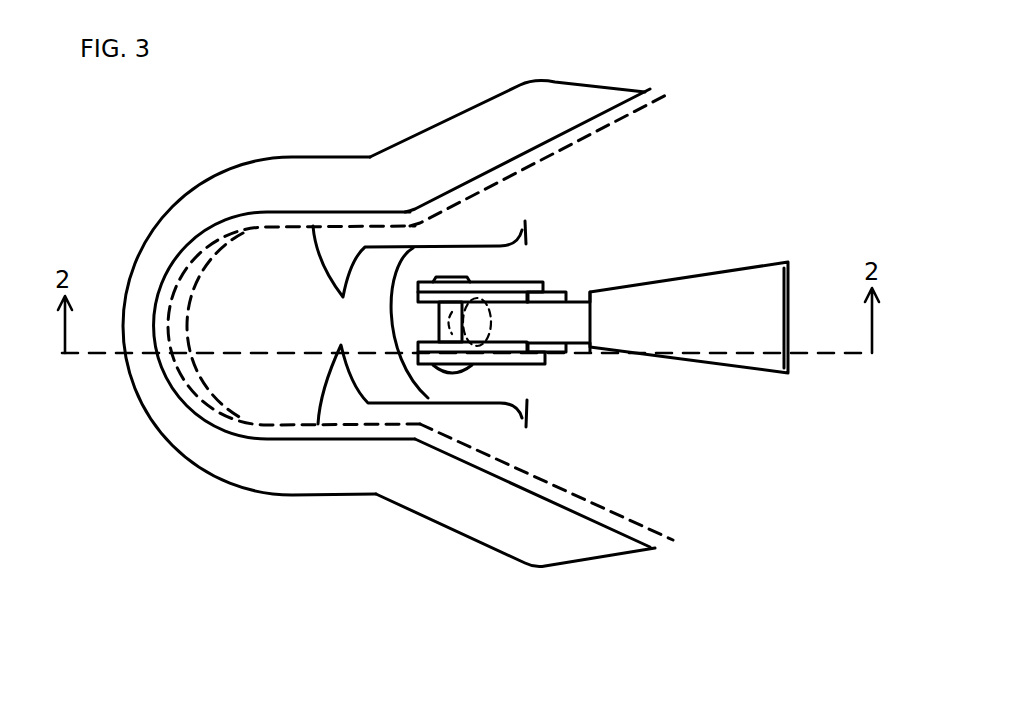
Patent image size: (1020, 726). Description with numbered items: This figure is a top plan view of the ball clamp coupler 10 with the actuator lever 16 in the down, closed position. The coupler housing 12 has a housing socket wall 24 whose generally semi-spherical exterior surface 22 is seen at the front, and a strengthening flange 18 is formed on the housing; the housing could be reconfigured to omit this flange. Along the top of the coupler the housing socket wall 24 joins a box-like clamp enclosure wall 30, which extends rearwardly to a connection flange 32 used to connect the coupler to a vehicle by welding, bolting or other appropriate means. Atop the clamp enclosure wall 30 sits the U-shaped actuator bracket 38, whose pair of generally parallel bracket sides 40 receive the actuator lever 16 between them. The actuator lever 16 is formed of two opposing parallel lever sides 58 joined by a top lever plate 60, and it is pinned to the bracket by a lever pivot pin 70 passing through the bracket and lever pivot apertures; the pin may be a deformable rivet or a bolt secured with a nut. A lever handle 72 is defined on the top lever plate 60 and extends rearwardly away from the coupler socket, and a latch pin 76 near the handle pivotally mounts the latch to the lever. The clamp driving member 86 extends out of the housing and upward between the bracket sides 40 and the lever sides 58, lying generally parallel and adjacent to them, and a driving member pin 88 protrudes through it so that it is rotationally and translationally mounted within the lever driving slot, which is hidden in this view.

The ball clamp coupler 10 is at (90, 222).
The coupler housing 12 is at (157, 385).
The actuator lever 16 is at (712, 297).
The strengthening flange 18 is at (190, 445).
The exterior surface 22 is at (218, 370).
The housing socket wall 24 is at (228, 380).
The clamp enclosure wall 30 is at (408, 325).
The connection flange 32 is at (637, 497).
The actuator bracket 38 is at (512, 282).
The bracket sides 40 is at (442, 368).
The lever sides 58 is at (408, 350).
The top lever plate 60 is at (773, 300).
The lever pivot pin 70 is at (465, 378).
The lever handle 72 is at (750, 337).
The latch pin 76 is at (556, 296).
The clamp driving member 86 is at (530, 363).
The driving member pin 88 is at (497, 365).